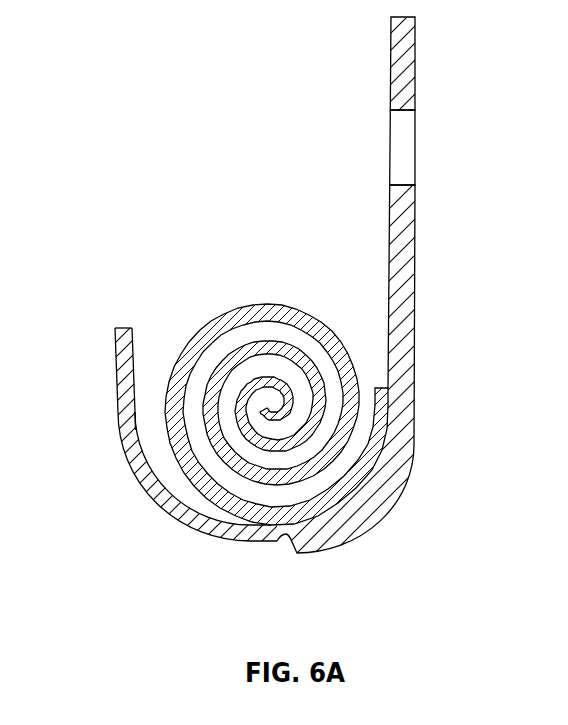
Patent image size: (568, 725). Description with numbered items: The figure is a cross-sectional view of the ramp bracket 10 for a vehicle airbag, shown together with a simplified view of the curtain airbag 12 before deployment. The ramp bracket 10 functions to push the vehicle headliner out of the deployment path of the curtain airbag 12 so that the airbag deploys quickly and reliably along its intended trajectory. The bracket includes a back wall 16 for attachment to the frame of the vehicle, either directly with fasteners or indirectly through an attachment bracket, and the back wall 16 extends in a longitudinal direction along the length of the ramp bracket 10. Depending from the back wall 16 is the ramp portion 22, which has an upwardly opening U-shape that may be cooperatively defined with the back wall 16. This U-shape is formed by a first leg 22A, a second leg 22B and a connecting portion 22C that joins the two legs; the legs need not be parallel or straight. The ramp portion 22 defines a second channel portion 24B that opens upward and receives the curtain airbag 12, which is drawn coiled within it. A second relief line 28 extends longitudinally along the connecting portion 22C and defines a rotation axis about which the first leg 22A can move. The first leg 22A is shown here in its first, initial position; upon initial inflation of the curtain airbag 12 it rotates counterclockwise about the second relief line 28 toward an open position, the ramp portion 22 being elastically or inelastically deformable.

The ramp bracket 10 is at (386, 67).
The back wall 16 is at (415, 217).
The second leg 22B is at (414, 331).
The connecting portion 22C is at (318, 551).
The curtain airbag 12 is at (373, 460).
The ramp portion 22 is at (233, 552).
The first leg 22A is at (120, 380).
The second channel portion 24B is at (187, 507).
The second relief line 28 is at (284, 545).